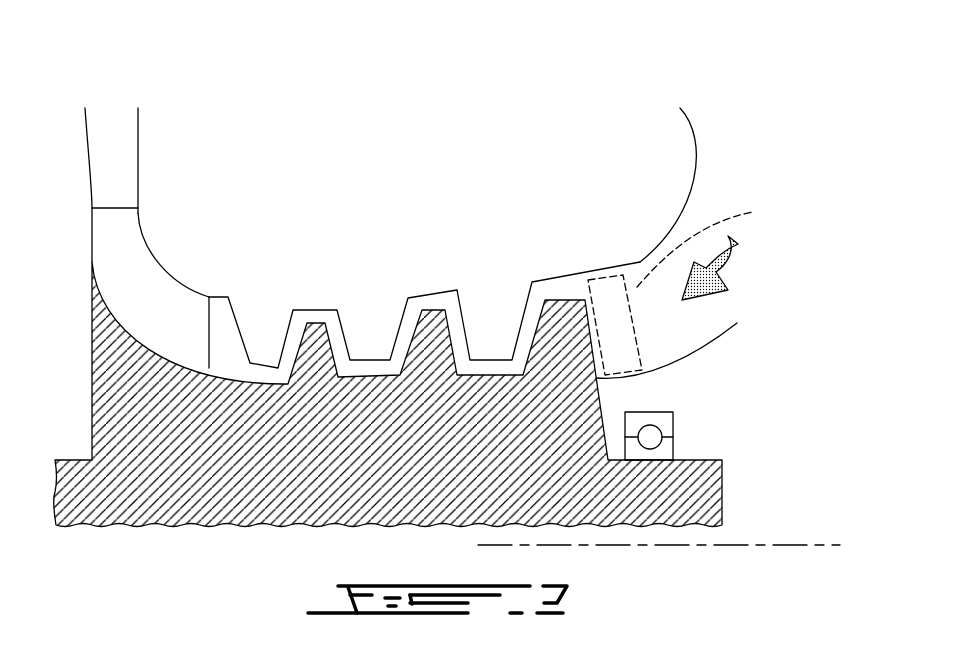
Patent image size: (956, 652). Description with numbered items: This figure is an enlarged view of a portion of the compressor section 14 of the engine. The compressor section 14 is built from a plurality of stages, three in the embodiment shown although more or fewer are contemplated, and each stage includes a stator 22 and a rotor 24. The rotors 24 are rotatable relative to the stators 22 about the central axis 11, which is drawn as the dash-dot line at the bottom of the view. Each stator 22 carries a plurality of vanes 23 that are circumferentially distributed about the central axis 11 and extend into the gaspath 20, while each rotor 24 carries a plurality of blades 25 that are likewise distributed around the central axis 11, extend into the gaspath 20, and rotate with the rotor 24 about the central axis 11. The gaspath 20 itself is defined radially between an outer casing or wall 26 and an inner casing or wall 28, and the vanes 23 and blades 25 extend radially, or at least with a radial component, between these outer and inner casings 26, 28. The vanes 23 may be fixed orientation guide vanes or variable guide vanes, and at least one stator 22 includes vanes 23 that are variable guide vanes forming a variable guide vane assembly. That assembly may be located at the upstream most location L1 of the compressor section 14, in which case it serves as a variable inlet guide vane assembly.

The compressor section 14 is at (353, 133).
The gaspath 20 is at (142, 285).
The stator 22 is at (368, 320).
The vanes 23 is at (260, 323).
The rotor 24 is at (543, 320).
The blades 25 is at (560, 328).
The outer casing 26 is at (640, 260).
The inner casing 28 is at (695, 353).
The central axis 11 is at (763, 543).
The upstream most location L1 is at (711, 250).